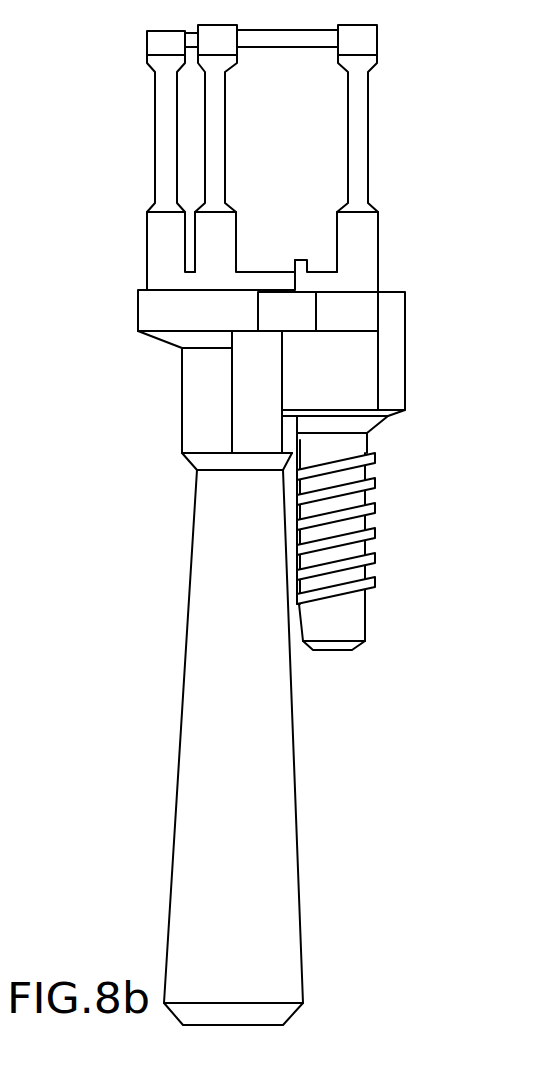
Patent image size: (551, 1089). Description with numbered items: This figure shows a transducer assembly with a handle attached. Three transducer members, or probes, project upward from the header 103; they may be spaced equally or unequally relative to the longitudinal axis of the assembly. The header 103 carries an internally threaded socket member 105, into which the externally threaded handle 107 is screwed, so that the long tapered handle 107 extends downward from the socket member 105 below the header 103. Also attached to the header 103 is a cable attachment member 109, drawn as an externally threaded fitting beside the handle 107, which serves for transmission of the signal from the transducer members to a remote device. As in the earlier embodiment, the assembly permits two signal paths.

The header 103 is at (140, 331).
The internally threaded socket member 105 is at (182, 417).
The externally threaded handle 107 is at (182, 733).
The cable attachment member 109 is at (367, 557).